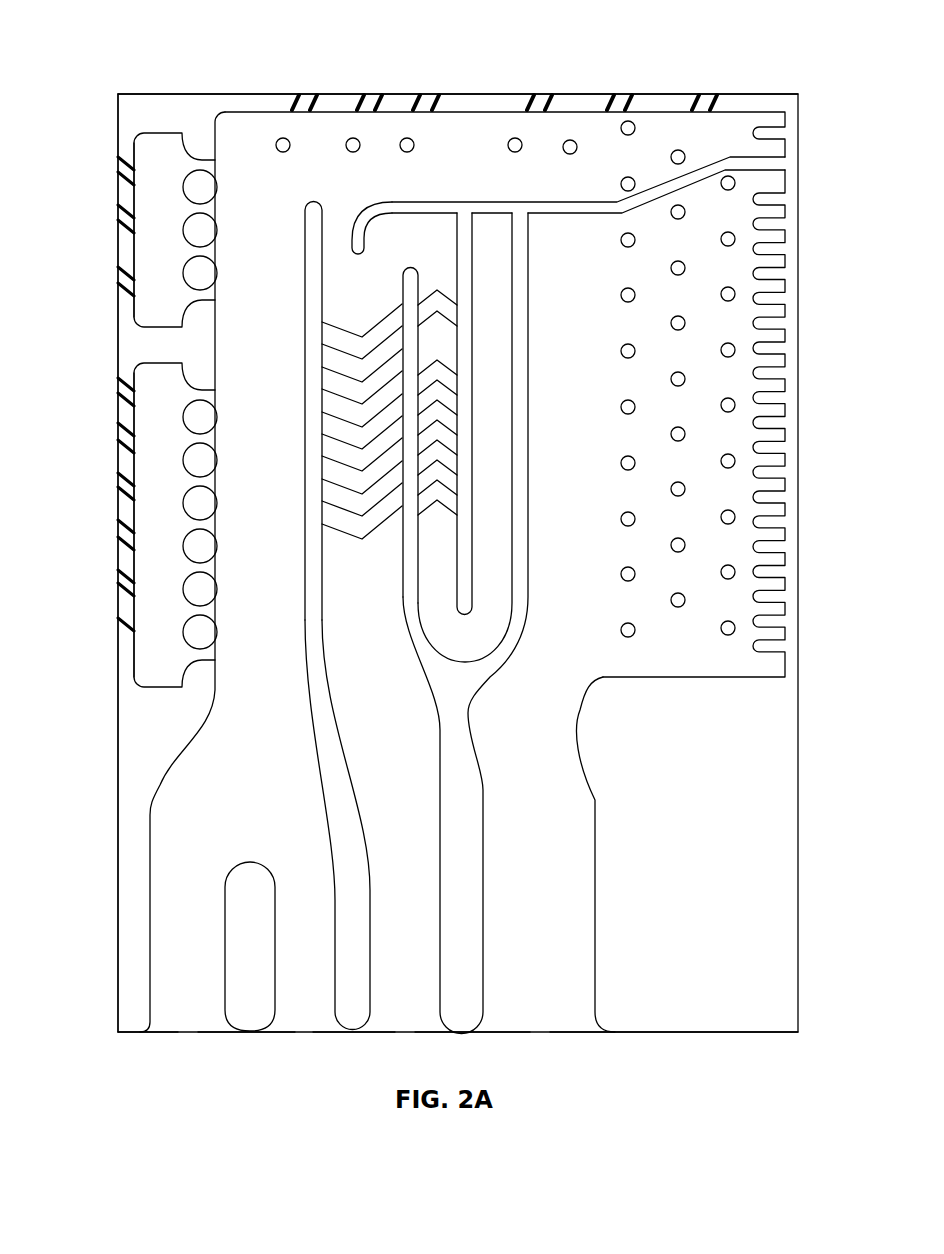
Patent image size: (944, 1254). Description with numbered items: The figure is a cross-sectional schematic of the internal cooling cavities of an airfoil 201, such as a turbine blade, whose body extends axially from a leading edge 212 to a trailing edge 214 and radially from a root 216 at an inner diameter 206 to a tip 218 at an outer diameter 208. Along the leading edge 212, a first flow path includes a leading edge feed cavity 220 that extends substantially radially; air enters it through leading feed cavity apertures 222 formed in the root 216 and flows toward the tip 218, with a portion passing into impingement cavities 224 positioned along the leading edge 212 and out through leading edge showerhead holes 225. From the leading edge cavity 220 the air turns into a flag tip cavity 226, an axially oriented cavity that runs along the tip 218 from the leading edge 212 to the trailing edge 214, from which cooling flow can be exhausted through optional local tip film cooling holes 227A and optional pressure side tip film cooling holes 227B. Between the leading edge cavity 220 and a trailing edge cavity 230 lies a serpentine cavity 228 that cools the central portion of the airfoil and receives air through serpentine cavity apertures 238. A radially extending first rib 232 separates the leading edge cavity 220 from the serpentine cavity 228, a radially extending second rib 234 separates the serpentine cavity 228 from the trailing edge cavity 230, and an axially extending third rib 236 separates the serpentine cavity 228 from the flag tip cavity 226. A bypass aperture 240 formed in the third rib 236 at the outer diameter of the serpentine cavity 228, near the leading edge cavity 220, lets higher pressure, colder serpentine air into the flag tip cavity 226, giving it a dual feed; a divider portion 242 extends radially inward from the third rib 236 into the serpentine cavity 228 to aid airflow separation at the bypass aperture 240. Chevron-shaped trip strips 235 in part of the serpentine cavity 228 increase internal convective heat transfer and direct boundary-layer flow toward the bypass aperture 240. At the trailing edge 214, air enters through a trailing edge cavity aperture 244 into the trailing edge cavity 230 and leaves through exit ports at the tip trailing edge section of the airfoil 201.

The airfoil 201 is at (792, 81).
The inner diameter 206 is at (116, 1031).
The outer diameter 208 is at (128, 81).
The leading edge 212 is at (118, 553).
The trailing edge 214 is at (777, 537).
The root 216 is at (605, 1030).
The tip 218 is at (452, 94).
The leading edge feed cavity 220 is at (270, 261).
The leading feed cavity apertures 222 is at (185, 1022).
The impingement cavities 224 is at (148, 263).
The leading edge showerhead holes 225 is at (122, 170).
The flag tip cavity 226 is at (466, 164).
The local tip film cooling holes 227A is at (322, 92).
The pressure side tip film cooling holes 227B is at (277, 149).
The serpentine cavity 228 is at (456, 356).
The trailing edge cavity 230 is at (603, 456).
The first rib 232 is at (313, 600).
The second rib 234 is at (455, 790).
The trip strips 235 is at (330, 425).
The third rib 236 is at (557, 210).
The serpentine cavity apertures 238 is at (405, 1022).
The bypass aperture 240 is at (335, 209).
The divider portion 242 is at (357, 258).
The trailing edge cavity aperture 244 is at (540, 1022).